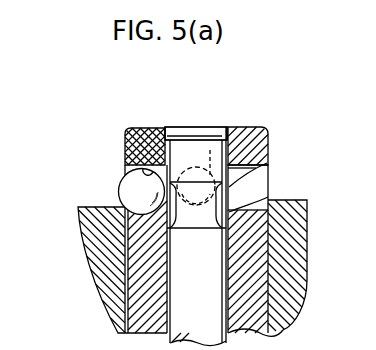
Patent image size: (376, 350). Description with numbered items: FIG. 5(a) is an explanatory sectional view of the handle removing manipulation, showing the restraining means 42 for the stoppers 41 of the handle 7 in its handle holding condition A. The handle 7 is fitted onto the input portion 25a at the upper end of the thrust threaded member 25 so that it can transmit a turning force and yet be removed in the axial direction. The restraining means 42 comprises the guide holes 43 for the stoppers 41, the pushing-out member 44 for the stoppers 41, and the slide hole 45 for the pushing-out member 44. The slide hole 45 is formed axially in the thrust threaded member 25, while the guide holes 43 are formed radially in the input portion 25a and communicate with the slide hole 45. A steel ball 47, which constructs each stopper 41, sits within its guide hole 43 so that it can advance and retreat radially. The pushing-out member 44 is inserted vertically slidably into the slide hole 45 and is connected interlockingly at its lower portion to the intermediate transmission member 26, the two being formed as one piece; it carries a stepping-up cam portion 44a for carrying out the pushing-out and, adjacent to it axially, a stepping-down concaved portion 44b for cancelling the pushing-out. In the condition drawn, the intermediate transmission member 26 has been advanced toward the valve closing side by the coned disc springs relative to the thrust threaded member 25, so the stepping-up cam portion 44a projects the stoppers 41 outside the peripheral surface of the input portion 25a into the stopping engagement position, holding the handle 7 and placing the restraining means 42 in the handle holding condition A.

The restraining means 42 is at (187, 91).
The guide hole 43 is at (127, 129).
The pushing-out member 44 is at (148, 128).
The stepping-up cam portion 44a is at (273, 155).
The stepping-down concaved portion 44b is at (275, 190).
The slide hole 45 is at (170, 127).
The stopper 41 is at (118, 188).
The steel ball 47 is at (118, 185).
The thrust threaded member 25 is at (122, 310).
The input portion 25a is at (135, 258).
The handle 7 is at (108, 295).
The intermediate transmission member 26 is at (268, 329).
The handle holding condition A is at (201, 117).